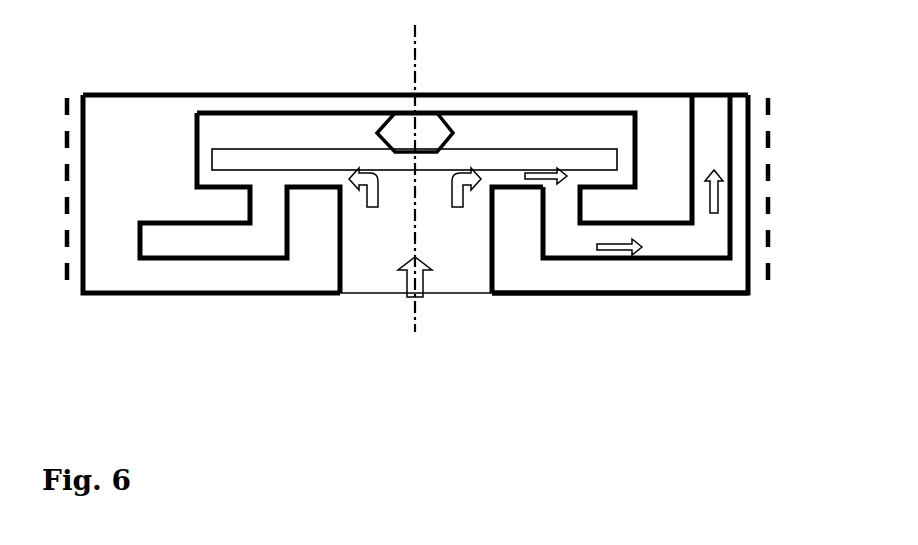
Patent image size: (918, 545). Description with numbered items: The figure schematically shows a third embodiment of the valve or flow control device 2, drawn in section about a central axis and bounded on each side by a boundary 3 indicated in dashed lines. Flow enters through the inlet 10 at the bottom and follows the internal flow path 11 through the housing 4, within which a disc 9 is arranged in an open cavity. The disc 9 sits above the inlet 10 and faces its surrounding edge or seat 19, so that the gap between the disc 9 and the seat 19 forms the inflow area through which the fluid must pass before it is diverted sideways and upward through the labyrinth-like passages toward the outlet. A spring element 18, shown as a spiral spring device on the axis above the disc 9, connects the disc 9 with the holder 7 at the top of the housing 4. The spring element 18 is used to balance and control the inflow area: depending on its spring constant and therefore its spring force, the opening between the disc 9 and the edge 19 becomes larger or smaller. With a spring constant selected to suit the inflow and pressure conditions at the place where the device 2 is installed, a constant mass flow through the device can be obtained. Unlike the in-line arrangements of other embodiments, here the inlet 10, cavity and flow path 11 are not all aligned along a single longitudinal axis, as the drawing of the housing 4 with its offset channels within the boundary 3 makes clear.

The housing 2 is at (175, 311).
The boundary / wall 3 is at (766, 105).
The housing 4 is at (567, 282).
The holder 7 is at (267, 95).
The disc 9 is at (322, 160).
The inlet 10 is at (367, 257).
The internal flow path 11 is at (418, 297).
The spring element 18 is at (433, 133).
The seat 19 is at (497, 190).